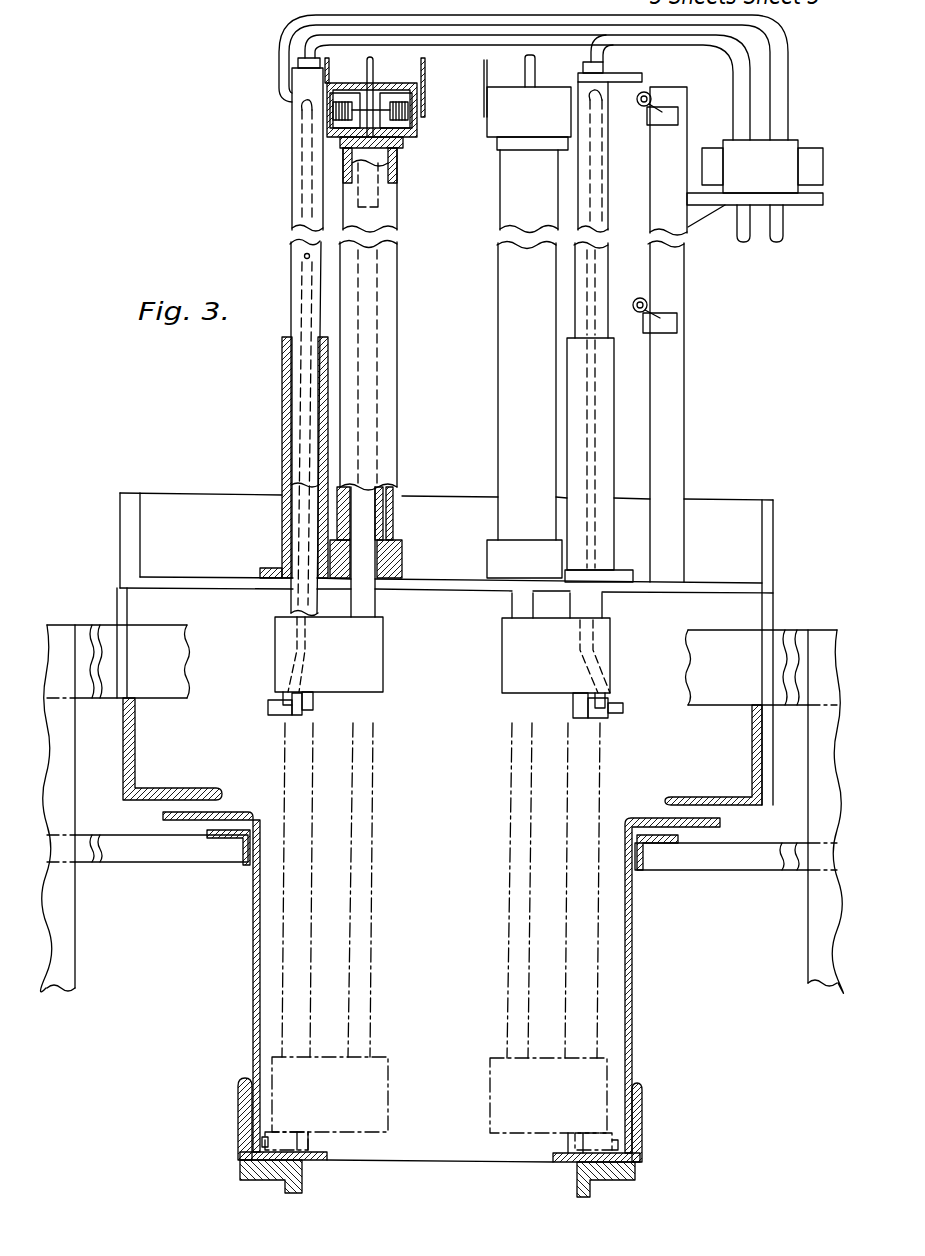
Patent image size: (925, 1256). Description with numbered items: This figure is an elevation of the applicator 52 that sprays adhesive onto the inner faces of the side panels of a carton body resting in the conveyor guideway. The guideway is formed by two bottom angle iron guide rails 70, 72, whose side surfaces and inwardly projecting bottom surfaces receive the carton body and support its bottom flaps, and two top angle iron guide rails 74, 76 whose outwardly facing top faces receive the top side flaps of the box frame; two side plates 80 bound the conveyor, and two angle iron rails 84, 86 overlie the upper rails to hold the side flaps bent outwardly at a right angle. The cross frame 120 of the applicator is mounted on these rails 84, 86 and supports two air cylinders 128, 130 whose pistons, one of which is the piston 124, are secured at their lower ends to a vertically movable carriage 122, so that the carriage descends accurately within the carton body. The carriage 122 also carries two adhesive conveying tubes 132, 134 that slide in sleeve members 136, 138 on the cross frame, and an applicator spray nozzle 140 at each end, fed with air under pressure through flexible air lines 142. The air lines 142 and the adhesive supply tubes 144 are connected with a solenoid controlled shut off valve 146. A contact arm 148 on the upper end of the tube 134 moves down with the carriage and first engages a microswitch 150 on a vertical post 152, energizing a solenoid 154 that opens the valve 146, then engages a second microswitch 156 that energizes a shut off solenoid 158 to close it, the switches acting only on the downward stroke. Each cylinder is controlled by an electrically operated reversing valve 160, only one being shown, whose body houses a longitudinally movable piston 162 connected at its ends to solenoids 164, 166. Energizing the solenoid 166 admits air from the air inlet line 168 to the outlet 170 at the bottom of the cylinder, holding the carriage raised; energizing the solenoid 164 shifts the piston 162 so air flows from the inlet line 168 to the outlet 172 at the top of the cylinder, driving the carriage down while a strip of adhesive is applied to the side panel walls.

The applicator 52 is at (700, 365).
The bottom angle iron guide rail 70 is at (253, 1173).
The bottom angle iron guide rail 72 is at (637, 1178).
The top angle iron guide rail 74 is at (232, 840).
The top angle iron guide rail 76 is at (662, 845).
The side plate 80 is at (243, 1090).
The angle iron rail 84 is at (147, 790).
The angle iron rail 86 is at (735, 763).
The cross frame 120 is at (732, 508).
The carriage 122 is at (612, 638).
The piston 124 is at (382, 478).
The air cylinder 128 is at (385, 403).
The air cylinder 130 is at (502, 387).
The adhesive conveying tube 132 is at (290, 261).
The adhesive conveying tube 134 is at (602, 217).
The sleeve member 136 is at (283, 357).
The sleeve member 138 is at (607, 423).
The applicator spray nozzle 140 is at (272, 695).
The air line 142 is at (737, 115).
The adhesive supply tube 144 is at (790, 80).
The shut off valve 146 is at (787, 157).
The contact arm 148 is at (640, 78).
The microswitch 150 is at (640, 108).
The vertical post 152 is at (677, 278).
The solenoid 154 is at (703, 170).
The second microswitch 156 is at (643, 287).
The shut off solenoid 158 is at (820, 168).
The reversing valve 160 is at (429, 102).
The piston 162 is at (373, 100).
The solenoid 164 is at (332, 113).
The solenoid 166 is at (417, 120).
The air inlet line 168 is at (367, 68).
The outlet 170 is at (398, 150).
The outlet 172 is at (340, 143).